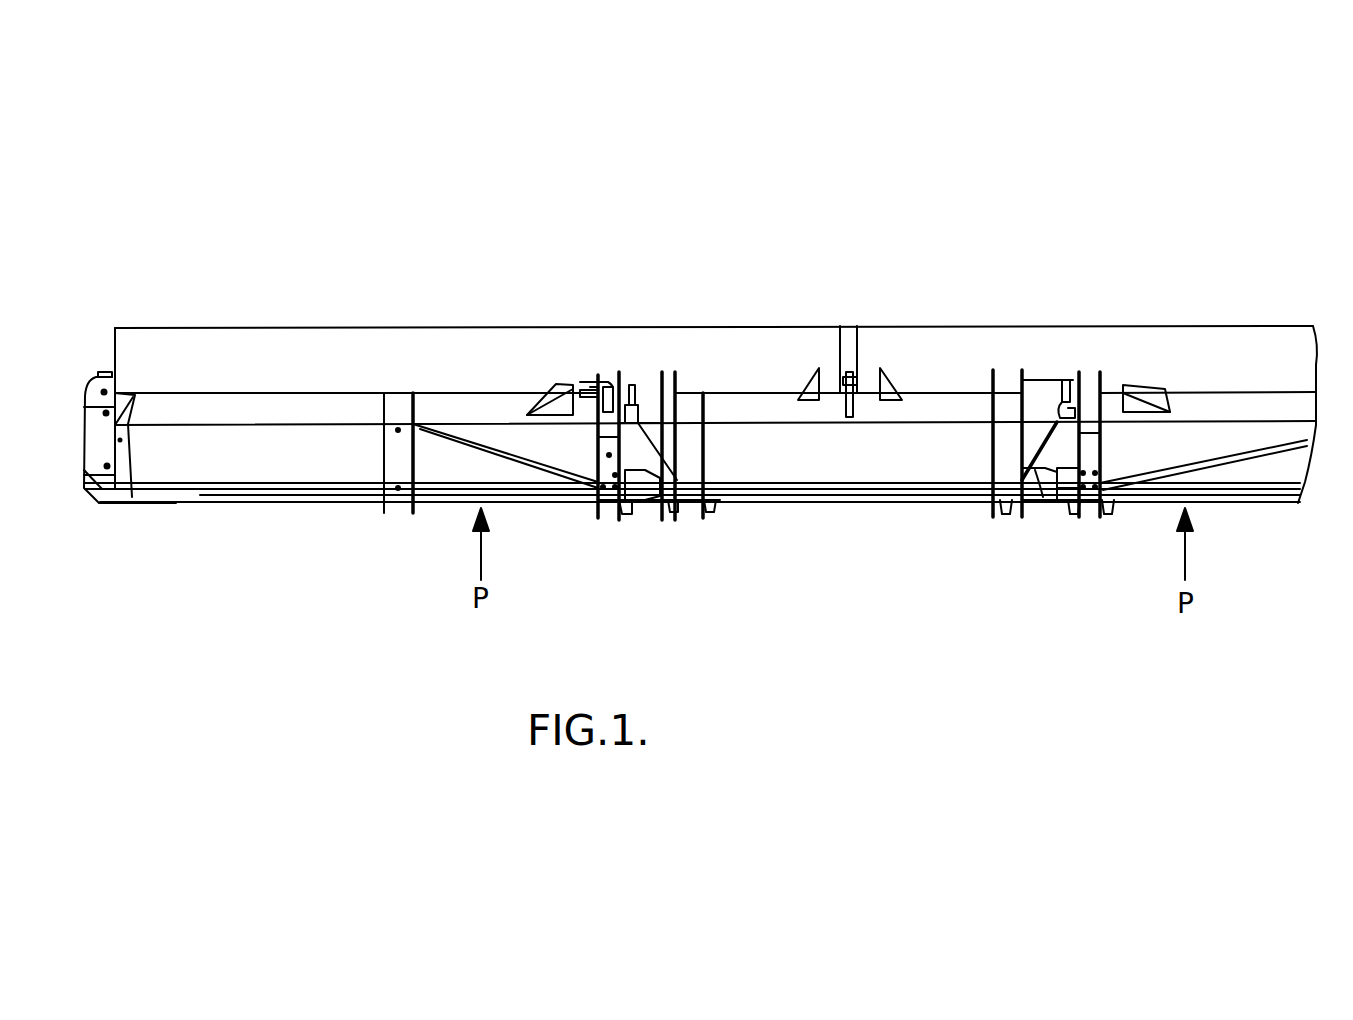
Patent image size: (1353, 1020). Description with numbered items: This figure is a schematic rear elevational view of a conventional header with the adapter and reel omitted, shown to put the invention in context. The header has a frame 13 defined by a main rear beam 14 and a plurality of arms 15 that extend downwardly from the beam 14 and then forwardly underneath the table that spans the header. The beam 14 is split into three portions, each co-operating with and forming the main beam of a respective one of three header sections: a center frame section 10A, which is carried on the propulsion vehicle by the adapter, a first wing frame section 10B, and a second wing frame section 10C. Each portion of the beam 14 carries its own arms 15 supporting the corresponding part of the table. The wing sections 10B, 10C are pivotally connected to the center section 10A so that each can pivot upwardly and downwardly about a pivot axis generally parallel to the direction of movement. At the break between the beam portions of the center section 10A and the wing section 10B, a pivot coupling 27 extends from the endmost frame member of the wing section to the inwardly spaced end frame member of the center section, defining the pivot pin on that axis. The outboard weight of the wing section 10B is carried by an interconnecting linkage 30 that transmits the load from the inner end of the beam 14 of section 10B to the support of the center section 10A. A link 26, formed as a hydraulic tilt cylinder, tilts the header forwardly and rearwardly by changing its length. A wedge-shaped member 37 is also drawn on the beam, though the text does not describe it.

The center frame section 10A is at (788, 298).
The first wing frame section 10B is at (392, 290).
The second wing frame section 10C is at (1151, 297).
The frame 13 is at (938, 354).
The main rear beam 14 is at (262, 412).
The arms 15 is at (400, 452).
The link 26 is at (853, 400).
The pivot coupling 27 is at (1035, 492).
The interconnecting linkage 30 is at (607, 348).
The wedge block 37 is at (557, 395).